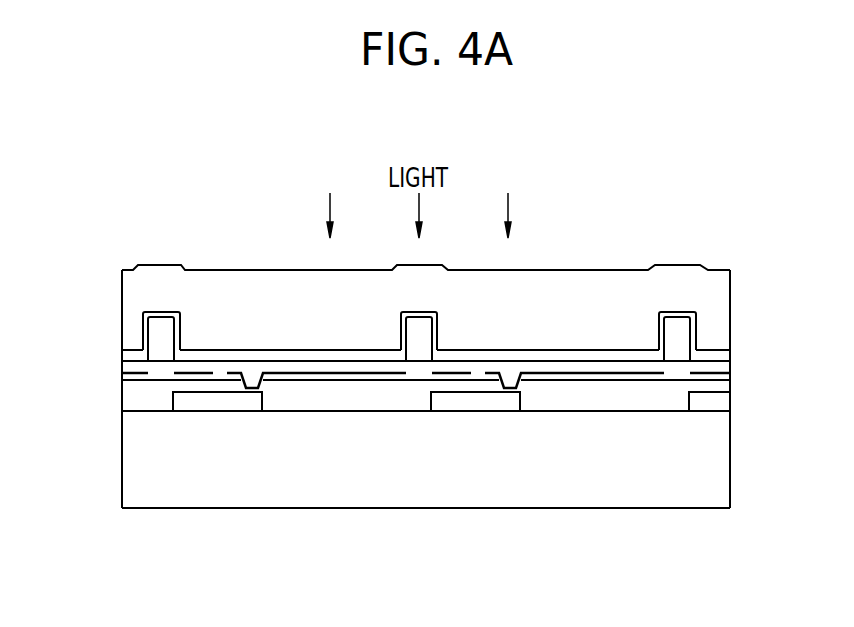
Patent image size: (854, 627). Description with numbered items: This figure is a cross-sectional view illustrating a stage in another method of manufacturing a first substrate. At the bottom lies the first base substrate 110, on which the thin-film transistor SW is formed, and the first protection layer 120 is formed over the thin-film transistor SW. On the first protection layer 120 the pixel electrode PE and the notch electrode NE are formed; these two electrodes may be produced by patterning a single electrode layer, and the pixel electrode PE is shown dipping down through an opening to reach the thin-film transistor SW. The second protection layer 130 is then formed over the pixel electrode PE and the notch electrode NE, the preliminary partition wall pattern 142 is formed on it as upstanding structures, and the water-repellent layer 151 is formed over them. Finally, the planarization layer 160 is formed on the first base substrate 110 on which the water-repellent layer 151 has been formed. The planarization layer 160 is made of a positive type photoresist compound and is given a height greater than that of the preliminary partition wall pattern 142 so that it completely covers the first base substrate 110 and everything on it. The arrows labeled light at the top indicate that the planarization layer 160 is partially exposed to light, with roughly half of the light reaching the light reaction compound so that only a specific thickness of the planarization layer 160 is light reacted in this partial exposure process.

The first base substrate 110 is at (127, 454).
The first protection layer 120 is at (127, 400).
The second protection layer 130 is at (127, 367).
The preliminary partition wall pattern 142 is at (158, 331).
The water-repellent layer 151 is at (360, 353).
The planarization layer 160 is at (127, 289).
The notch electrode NE is at (188, 377).
The thin-film transistor SW is at (227, 402).
The pixel electrode PE is at (287, 375).